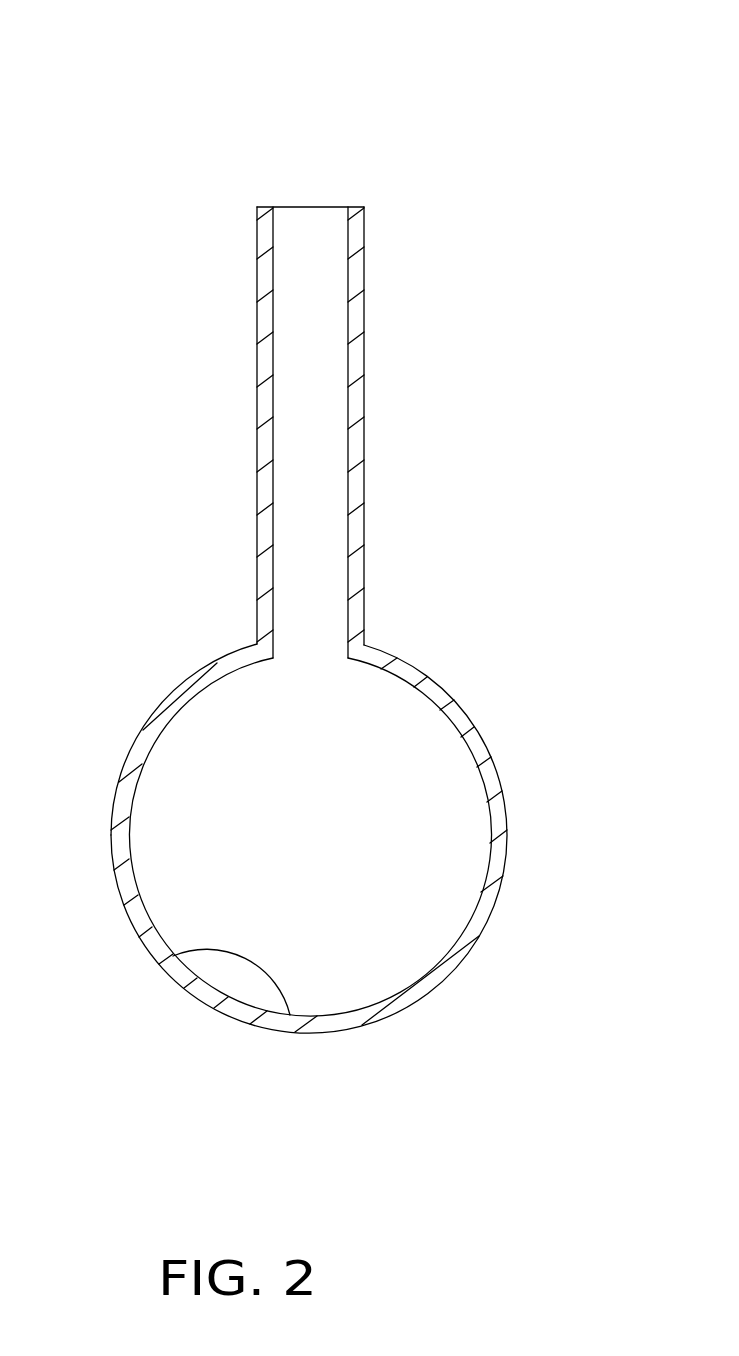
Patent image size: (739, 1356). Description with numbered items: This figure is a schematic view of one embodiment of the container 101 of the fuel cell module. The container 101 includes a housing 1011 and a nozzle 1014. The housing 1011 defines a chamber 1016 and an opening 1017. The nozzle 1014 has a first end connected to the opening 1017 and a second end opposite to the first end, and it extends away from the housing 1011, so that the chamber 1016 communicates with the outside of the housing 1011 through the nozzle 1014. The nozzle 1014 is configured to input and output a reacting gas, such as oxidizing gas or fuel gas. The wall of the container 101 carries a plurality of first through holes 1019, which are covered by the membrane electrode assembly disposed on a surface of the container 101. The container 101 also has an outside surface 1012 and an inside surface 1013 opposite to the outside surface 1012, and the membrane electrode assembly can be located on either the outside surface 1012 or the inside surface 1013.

The container 101 is at (166, 57).
The housing 1011 is at (498, 805).
The outside surface 1012 is at (120, 790).
The inside surface 1013 is at (173, 956).
The nozzle 1014 is at (267, 453).
The chamber 1016 is at (378, 750).
The opening 1017 is at (313, 650).
The first through holes 1019 is at (475, 930).